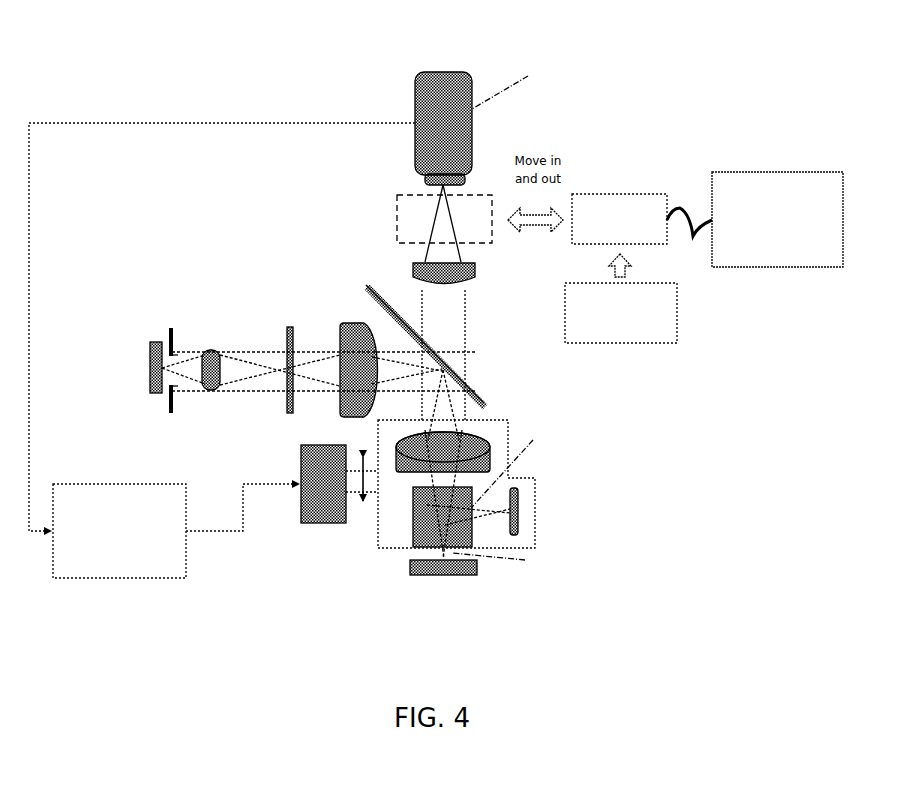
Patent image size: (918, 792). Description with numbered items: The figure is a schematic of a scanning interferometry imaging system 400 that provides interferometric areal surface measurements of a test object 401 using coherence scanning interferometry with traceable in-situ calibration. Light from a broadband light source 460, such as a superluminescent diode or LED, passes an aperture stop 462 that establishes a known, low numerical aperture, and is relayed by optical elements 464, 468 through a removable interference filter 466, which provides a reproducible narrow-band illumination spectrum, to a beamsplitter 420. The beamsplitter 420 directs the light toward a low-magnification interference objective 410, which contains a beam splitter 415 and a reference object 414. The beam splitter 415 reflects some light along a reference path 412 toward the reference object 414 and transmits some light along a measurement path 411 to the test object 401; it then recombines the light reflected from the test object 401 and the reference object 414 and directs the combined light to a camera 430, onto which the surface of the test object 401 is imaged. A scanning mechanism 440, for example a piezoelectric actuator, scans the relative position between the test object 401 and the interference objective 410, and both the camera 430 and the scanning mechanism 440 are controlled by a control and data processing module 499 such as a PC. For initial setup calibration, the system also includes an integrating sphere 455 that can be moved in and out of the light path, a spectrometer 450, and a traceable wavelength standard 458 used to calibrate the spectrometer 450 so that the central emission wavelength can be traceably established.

The scanning interferometry imaging system 400 is at (145, 72).
The test object 401 is at (450, 560).
The interference objective 410 is at (508, 420).
The measurement path 411 is at (571, 555).
The reference path 412 is at (576, 467).
The reference object 414 is at (519, 512).
The beam splitter 415 is at (413, 500).
The beamsplitter 420 is at (414, 329).
The camera 430 is at (462, 131).
The scanning mechanism 440 is at (301, 466).
The spectrometer 450 is at (757, 252).
The integrating sphere 455 is at (634, 192).
The traceable wavelength standard 458 is at (672, 311).
The light source 460 is at (110, 345).
The aperture stop 462 is at (169, 325).
The optical element 464 is at (212, 348).
The removable interference filter 466 is at (288, 328).
The optical element 468 is at (345, 337).
The control and data processing module 499 is at (100, 508).